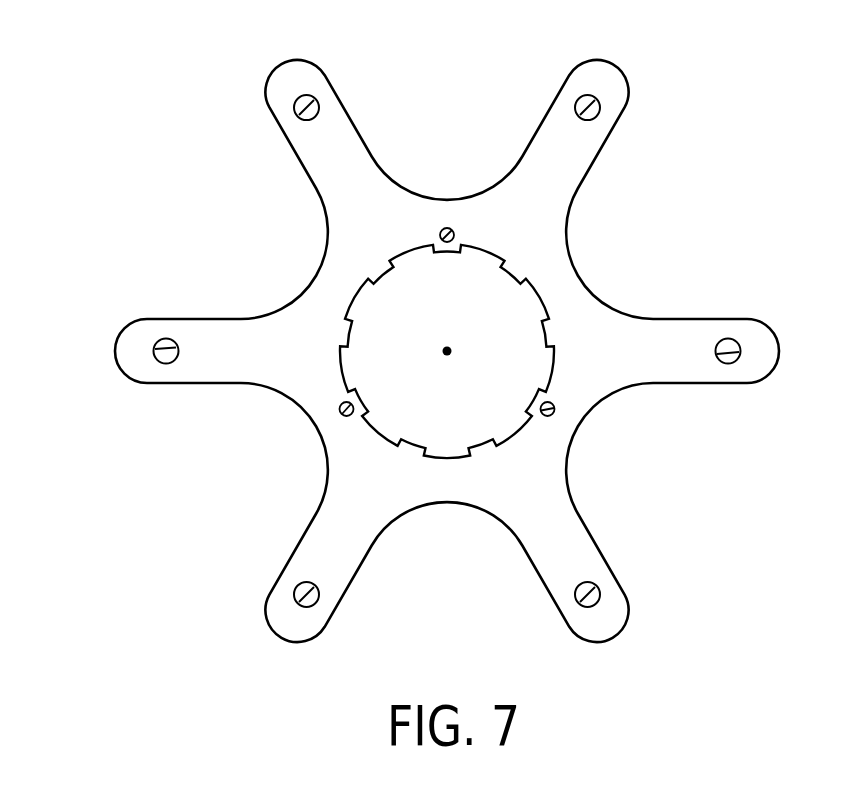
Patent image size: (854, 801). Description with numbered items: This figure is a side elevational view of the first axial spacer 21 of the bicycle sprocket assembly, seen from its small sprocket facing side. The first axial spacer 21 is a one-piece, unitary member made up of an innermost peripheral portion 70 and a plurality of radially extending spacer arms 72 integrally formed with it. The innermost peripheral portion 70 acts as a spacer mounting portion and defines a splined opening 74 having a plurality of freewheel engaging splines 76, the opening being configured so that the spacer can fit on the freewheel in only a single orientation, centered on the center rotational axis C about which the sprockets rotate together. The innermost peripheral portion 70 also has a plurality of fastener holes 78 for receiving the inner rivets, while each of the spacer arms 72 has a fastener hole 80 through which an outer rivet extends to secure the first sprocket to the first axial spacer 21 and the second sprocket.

The first axial spacer 21 is at (260, 73).
The innermost peripheral portion 70 is at (543, 243).
The spacer arms 72 is at (548, 137).
The splined opening 74 is at (532, 305).
The freewheel engaging splines 76 is at (360, 332).
The fastener holes 78 is at (447, 228).
The fastener hole 80 is at (312, 97).
The center rotational axis C is at (443, 350).